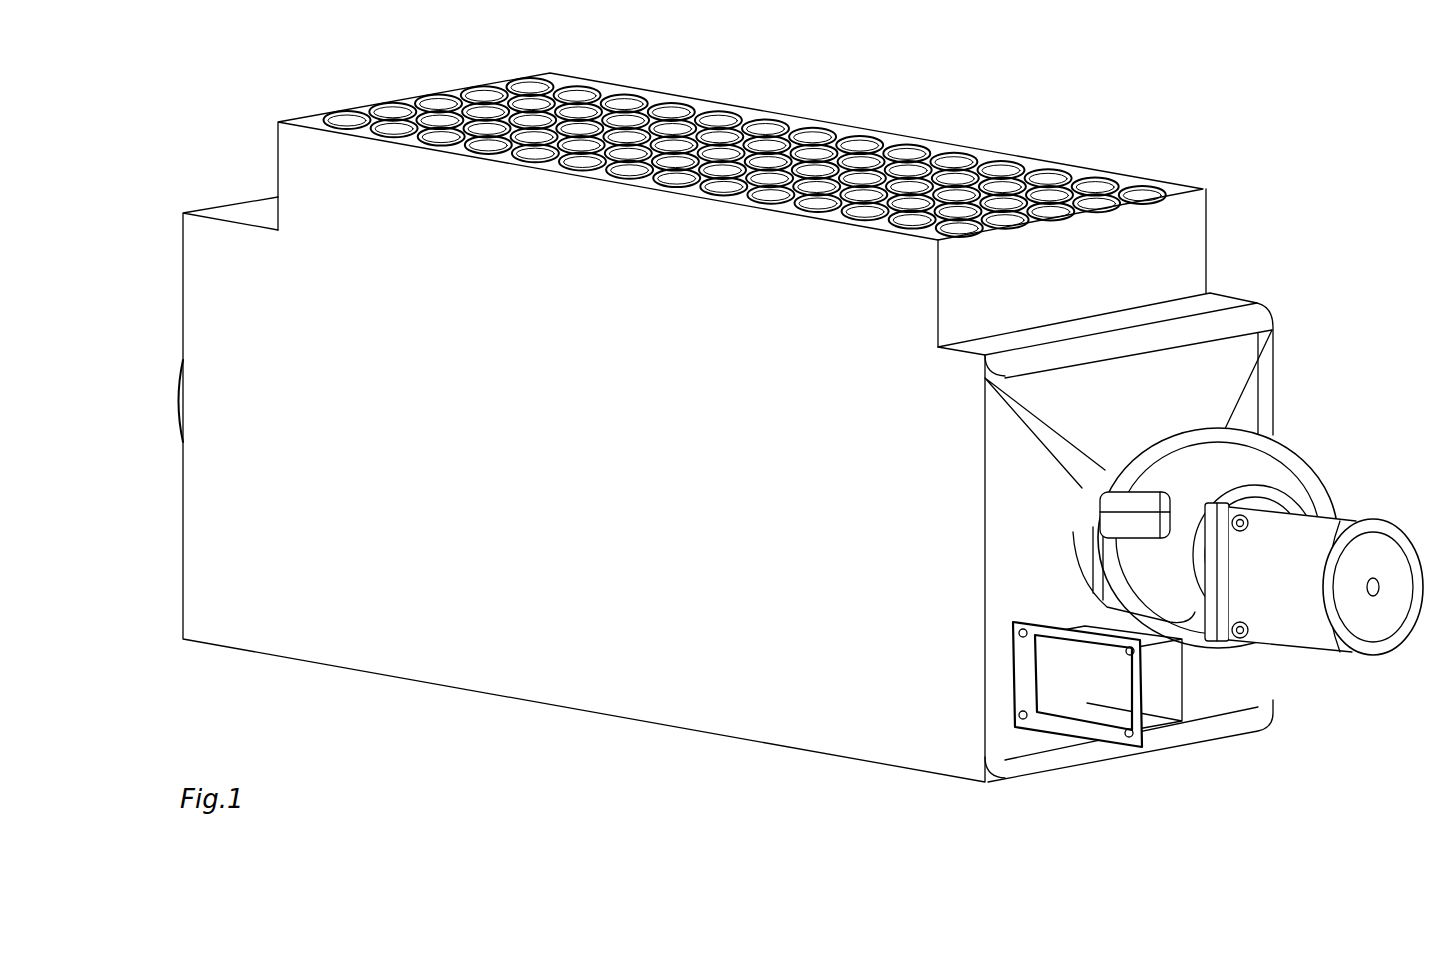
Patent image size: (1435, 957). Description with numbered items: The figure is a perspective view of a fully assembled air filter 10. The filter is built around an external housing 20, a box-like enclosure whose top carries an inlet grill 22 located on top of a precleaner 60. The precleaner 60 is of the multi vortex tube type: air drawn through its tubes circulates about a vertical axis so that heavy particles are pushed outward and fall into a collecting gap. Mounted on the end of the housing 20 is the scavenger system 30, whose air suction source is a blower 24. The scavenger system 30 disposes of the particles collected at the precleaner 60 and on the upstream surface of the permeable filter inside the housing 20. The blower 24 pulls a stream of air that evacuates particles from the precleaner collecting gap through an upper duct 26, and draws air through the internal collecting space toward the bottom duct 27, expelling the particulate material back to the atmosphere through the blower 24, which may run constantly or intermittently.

The air filter 10 is at (1344, 108).
The external housing 20 is at (183, 525).
The inlet grill 22 is at (1057, 168).
The blower 24 is at (1333, 488).
The upper duct 26 is at (1258, 344).
The bottom duct 27 is at (1038, 750).
The scavenger system 30 is at (1167, 818).
The precleaner 60 is at (447, 92).